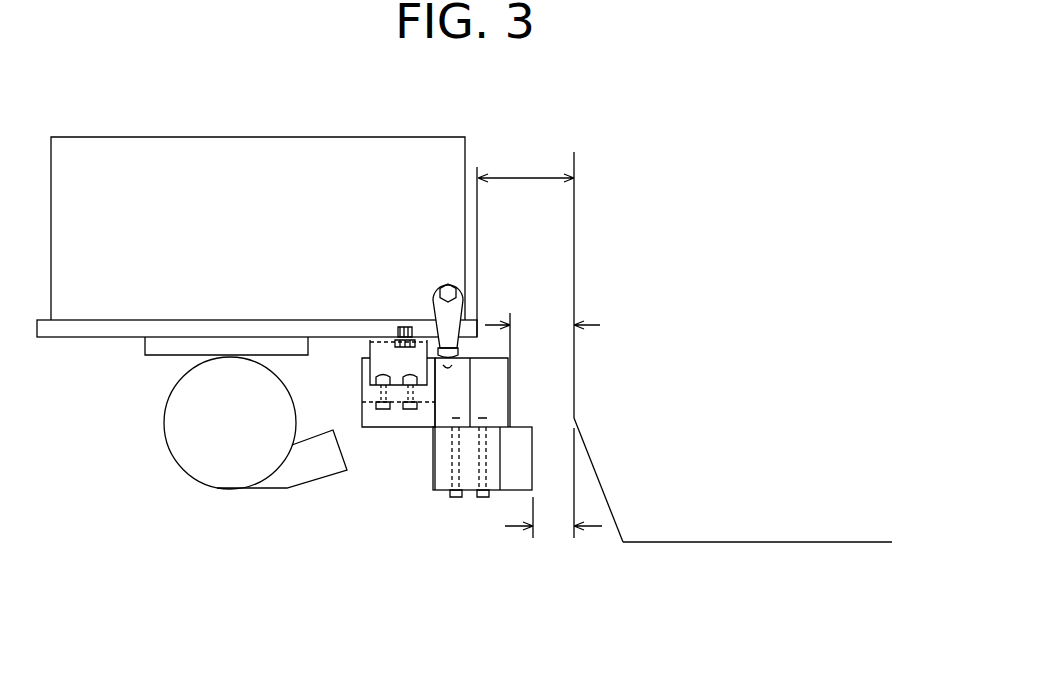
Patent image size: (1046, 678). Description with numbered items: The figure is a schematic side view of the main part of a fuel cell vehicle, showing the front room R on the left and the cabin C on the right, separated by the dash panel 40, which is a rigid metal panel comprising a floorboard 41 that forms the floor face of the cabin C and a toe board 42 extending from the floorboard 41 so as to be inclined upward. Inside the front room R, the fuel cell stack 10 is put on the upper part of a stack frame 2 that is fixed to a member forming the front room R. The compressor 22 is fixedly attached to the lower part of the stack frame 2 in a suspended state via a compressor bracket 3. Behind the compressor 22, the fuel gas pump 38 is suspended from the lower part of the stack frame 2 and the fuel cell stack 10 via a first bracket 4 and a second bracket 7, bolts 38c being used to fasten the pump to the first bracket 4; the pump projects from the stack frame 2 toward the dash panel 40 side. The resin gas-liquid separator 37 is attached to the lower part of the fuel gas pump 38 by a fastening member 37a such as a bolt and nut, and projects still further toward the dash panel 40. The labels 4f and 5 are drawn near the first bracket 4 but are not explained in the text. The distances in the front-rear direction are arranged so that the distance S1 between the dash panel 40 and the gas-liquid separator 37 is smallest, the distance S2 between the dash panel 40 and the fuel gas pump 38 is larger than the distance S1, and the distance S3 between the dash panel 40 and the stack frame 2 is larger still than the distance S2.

The front room R is at (171, 105).
The cabin C is at (812, 294).
The fuel cell stack 10 is at (347, 130).
The stack frame 2 is at (96, 331).
The compressor bracket 3 is at (178, 343).
The compressor 22 is at (178, 453).
The first bracket 4 is at (377, 357).
The mounting hole 4f is at (387, 322).
The bolt 5 is at (398, 327).
The second bracket 7 is at (436, 283).
The bolts 38c is at (407, 402).
The fuel gas pump 38 is at (493, 387).
The gas-liquid separator 37 is at (433, 460).
The fastening member 37a is at (480, 500).
The dash panel 40 is at (586, 250).
The floorboard 41 is at (610, 506).
The toe board 42 is at (738, 542).
The distance S3 is at (525, 241).
The distance S2 is at (542, 361).
The distance S1 is at (553, 527).